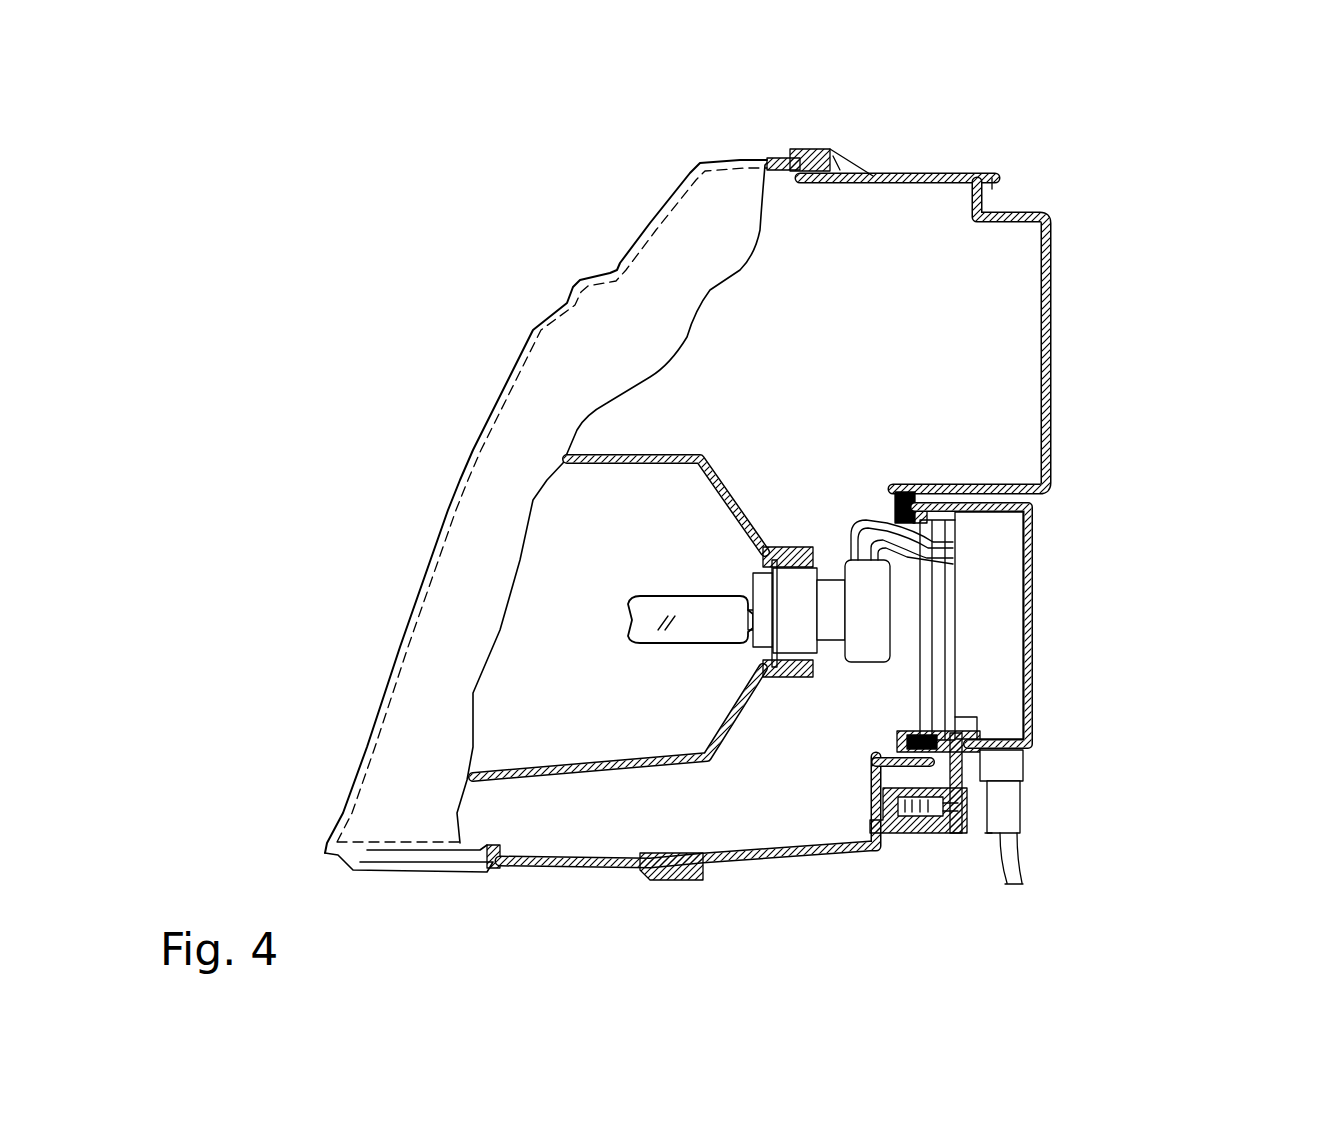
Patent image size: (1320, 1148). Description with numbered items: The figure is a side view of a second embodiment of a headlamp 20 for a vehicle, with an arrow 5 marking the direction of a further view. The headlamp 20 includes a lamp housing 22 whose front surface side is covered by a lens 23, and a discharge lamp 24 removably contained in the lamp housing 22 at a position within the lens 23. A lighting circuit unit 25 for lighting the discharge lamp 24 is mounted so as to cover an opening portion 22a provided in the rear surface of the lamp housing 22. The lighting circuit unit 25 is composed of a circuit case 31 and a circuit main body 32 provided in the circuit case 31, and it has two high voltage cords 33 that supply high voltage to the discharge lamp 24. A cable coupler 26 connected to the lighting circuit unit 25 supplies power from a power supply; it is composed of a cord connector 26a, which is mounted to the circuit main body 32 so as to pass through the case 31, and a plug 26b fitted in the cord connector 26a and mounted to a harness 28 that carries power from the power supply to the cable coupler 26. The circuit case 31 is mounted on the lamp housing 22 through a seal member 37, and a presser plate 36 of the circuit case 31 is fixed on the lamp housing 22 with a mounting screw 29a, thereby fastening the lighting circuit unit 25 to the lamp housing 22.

The headlamp 20 is at (372, 243).
The viewing direction of FIG. 5 is at (1175, 470).
The lamp housing 22 is at (1052, 282).
The opening portion 22a is at (922, 708).
The lens 23 is at (462, 471).
The discharge lamp 24 is at (662, 596).
The lighting circuit unit 25 is at (1047, 573).
The cable coupler 26 is at (1047, 789).
The cord connector 26a is at (1025, 762).
The plug 26b is at (1021, 815).
The harness 28 is at (1018, 867).
The mounting screw 29a is at (987, 830).
The circuit case 31 is at (1037, 680).
The circuit main body 32 is at (1001, 640).
The high voltage cords 33 is at (867, 517).
The presser plate 36 is at (957, 833).
The seal member 37 is at (933, 484).